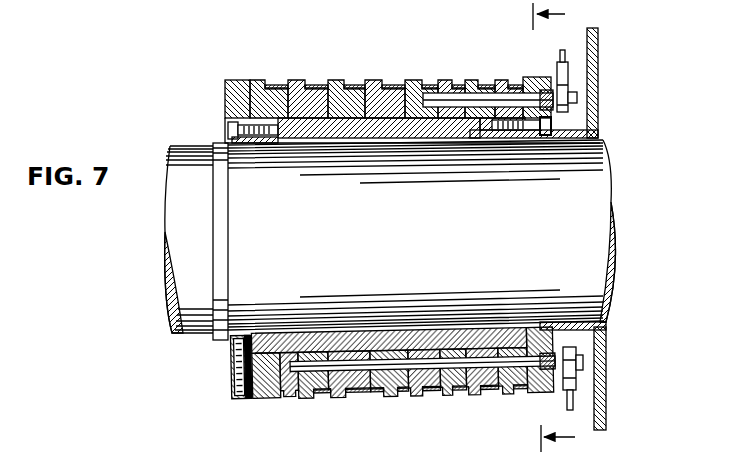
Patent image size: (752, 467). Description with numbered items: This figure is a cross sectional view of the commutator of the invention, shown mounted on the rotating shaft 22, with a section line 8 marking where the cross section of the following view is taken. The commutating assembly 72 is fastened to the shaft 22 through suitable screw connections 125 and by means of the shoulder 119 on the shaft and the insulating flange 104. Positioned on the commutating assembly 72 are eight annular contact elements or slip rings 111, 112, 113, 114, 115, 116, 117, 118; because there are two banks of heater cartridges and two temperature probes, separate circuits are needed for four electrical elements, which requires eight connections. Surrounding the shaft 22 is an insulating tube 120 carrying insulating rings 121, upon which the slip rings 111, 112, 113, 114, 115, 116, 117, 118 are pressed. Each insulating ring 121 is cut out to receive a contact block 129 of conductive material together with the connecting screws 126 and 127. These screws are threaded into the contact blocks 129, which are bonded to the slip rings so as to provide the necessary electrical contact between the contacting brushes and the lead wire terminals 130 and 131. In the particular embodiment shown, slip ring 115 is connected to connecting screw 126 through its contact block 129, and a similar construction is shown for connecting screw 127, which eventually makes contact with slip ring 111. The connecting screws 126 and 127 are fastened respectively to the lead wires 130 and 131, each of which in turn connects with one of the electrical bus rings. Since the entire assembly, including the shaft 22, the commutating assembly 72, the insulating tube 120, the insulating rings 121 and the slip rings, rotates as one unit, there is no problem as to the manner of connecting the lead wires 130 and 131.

The section line 8- 8 is at (543, 228).
The shaft 22 is at (168, 214).
The commutating assembly 72 is at (241, 74).
The insulating flange 104 is at (598, 40).
The slip ring 111 is at (271, 80).
The slip ring 112 is at (308, 80).
The slip ring 113 is at (345, 82).
The slip ring 114 is at (385, 80).
The slip ring 115 is at (412, 80).
The slip ring 116 is at (462, 82).
The slip ring 117 is at (490, 80).
The slip ring 118 is at (516, 80).
The shoulder 119 is at (226, 140).
The insulating tube 120 is at (471, 134).
The insulating ring 121 is at (306, 132).
The screw connection 125 is at (243, 377).
The connecting screw 126 is at (477, 138).
The connecting screw 127 is at (422, 370).
The contact block 129 is at (420, 134).
The lead wire 130 is at (558, 56).
The lead wire 131 is at (567, 390).